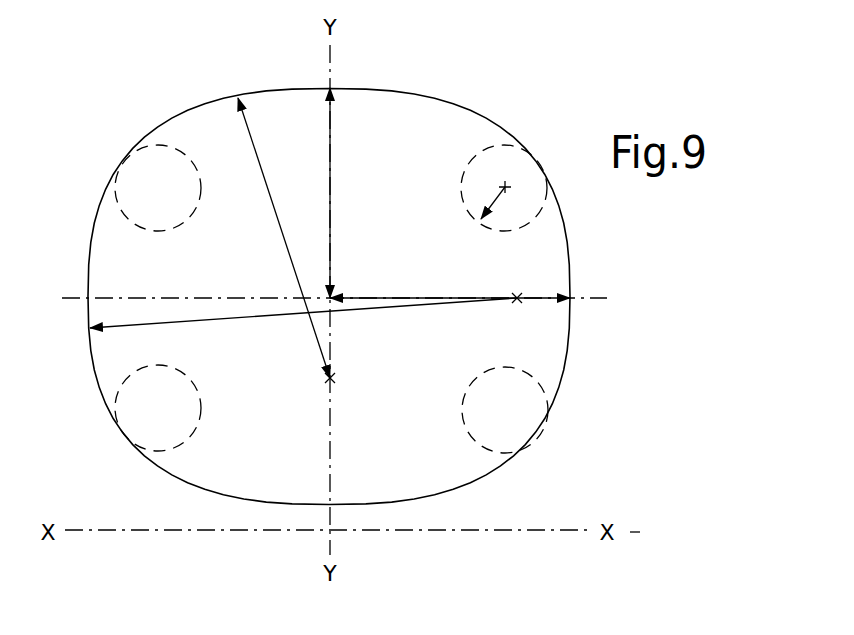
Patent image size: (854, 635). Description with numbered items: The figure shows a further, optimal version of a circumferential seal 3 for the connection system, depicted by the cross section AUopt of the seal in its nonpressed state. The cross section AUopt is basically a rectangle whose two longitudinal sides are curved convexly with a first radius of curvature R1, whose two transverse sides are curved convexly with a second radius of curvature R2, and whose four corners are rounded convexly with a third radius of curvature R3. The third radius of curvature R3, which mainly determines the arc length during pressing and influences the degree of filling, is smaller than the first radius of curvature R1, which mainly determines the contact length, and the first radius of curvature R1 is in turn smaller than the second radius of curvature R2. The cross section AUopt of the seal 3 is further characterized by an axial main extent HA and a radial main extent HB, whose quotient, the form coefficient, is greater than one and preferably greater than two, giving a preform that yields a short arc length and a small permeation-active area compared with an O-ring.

The circumferential seal 3 is at (112, 442).
The cross section of the nonpressed circumferential seal AUopt is at (415, 121).
The axial main extent of the seal cross section HA is at (413, 297).
The radial main extent of the seal cross section HB is at (332, 176).
The first radius of curvature R1 is at (270, 208).
The second radius of curvature R2 is at (227, 320).
The third radius of curvature R3 is at (484, 206).